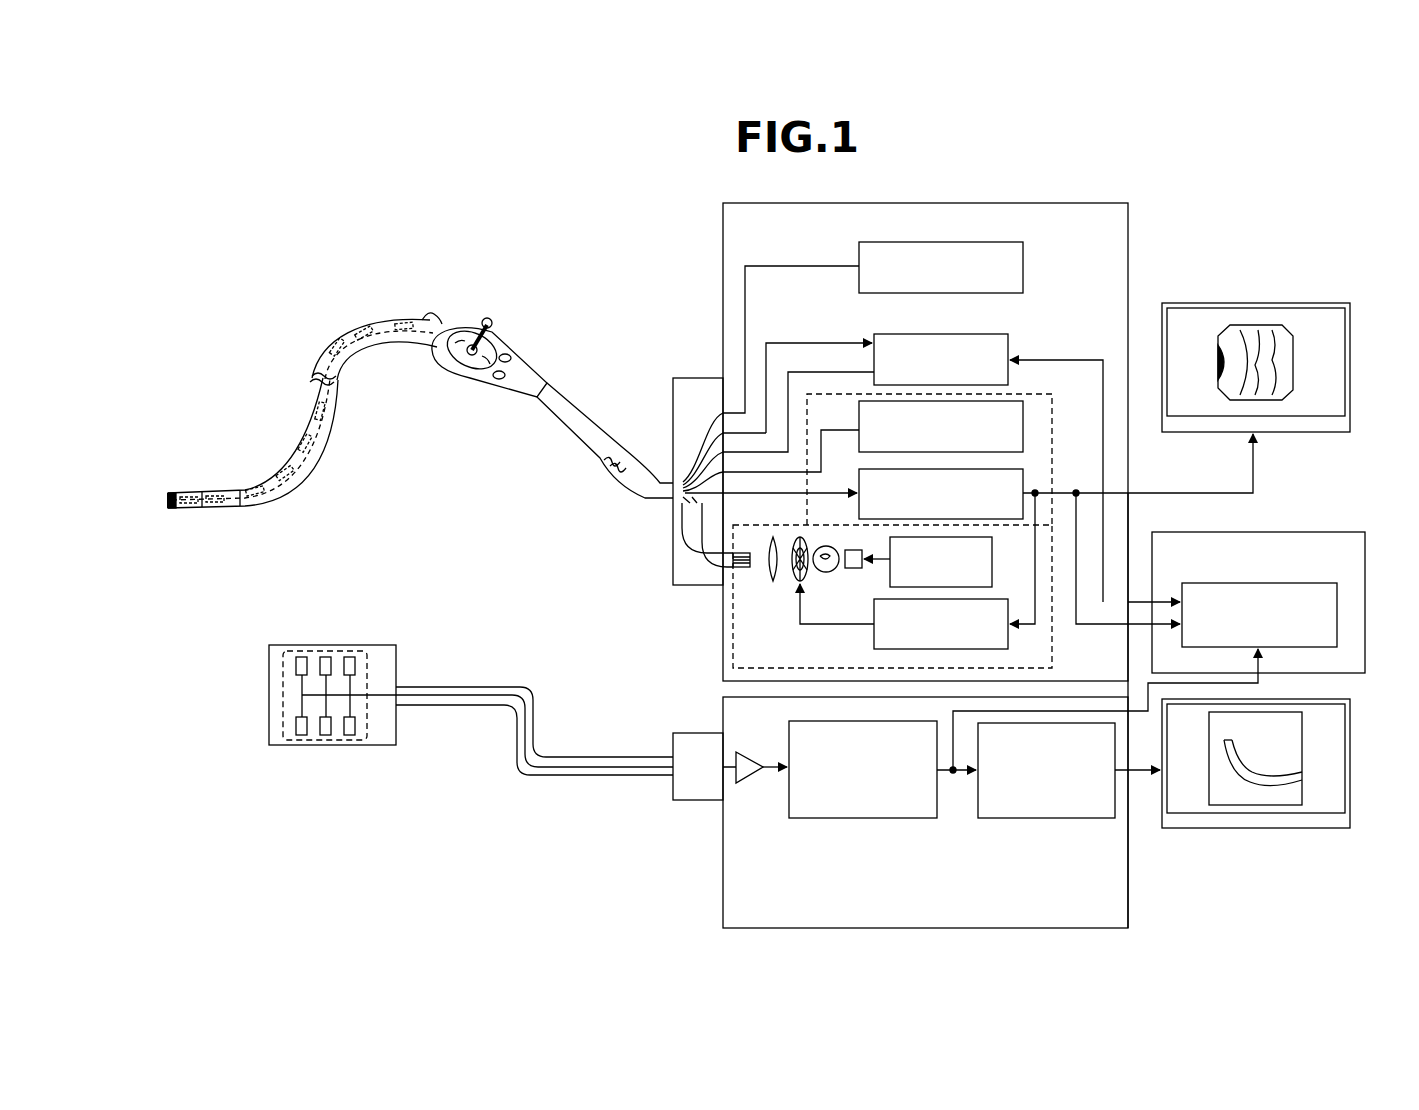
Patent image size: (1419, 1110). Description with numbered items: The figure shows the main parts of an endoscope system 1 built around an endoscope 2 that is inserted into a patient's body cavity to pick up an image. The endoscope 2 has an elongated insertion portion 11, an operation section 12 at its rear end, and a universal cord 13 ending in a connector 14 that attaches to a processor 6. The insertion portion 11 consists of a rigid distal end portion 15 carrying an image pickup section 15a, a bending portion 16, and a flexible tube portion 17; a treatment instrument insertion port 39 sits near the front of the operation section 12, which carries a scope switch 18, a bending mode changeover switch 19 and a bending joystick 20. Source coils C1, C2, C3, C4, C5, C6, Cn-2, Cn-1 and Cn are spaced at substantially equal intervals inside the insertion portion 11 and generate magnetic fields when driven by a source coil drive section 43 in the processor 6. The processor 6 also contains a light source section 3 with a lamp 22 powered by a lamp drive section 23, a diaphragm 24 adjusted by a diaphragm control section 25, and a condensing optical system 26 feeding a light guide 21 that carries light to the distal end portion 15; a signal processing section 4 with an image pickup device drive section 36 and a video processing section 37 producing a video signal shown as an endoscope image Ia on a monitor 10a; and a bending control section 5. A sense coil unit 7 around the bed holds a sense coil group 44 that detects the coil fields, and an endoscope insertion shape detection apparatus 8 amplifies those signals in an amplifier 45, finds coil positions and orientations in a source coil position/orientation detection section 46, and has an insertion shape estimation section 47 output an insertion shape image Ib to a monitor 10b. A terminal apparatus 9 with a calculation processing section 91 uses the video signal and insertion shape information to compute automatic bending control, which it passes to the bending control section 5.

The endoscope system 1 is at (376, 220).
The endoscope 2 is at (531, 330).
The light source section 3 is at (1055, 668).
The signal processing section 4 is at (1056, 420).
The bending control section 5 is at (1008, 340).
The processor 6 is at (721, 640).
The sense coil unit 7 is at (378, 643).
The endoscope insertion shape detection apparatus 8 is at (721, 857).
The terminal apparatus 9 is at (1252, 532).
The monitor 10a is at (1244, 290).
The monitor 10b is at (1306, 843).
The insertion portion 11 is at (326, 440).
The operation section 12 is at (452, 378).
The universal cord 13 is at (565, 430).
The connector 14 is at (673, 398).
The distal end portion 15 is at (190, 492).
The image pickup section 15a is at (170, 510).
The bending portion 16 is at (236, 492).
The flexible tube portion 17 is at (310, 420).
The scope switch 18 is at (512, 358).
The bending mode changeover switch 19 is at (500, 380).
The bending joystick 20 is at (486, 322).
The light guide 21 is at (673, 578).
The lamp 22 is at (826, 572).
The lamp drive section 23 is at (992, 575).
The diaphragm 24 is at (803, 583).
The diaphragm control section 25 is at (1008, 650).
The condensing optical system 26 is at (771, 582).
The image pickup device drive section 36 is at (858, 415).
The video processing section 37 is at (857, 490).
The treatment instrument insertion port 39 is at (430, 314).
The source coil drive section 43 is at (1023, 266).
The sense coil group 44 is at (323, 742).
The amplifier 45 is at (748, 785).
The source coil position/orientation detection section 46 is at (865, 818).
The insertion shape estimation section 47 is at (1035, 818).
The calculation processing section 91 is at (1338, 590).
The source coil C1 is at (186, 508).
The source coil C2 is at (215, 508).
The source coil C3 is at (250, 498).
The source coil C4 is at (283, 478).
The source coil C5 is at (308, 455).
The source coil C6 is at (326, 420).
The source coil Cn-2 is at (332, 350).
The source coil Cn-1 is at (363, 328).
The source coil Cn is at (405, 322).
The endoscope image Ia is at (1290, 330).
The insertion shape image Ib is at (1305, 722).